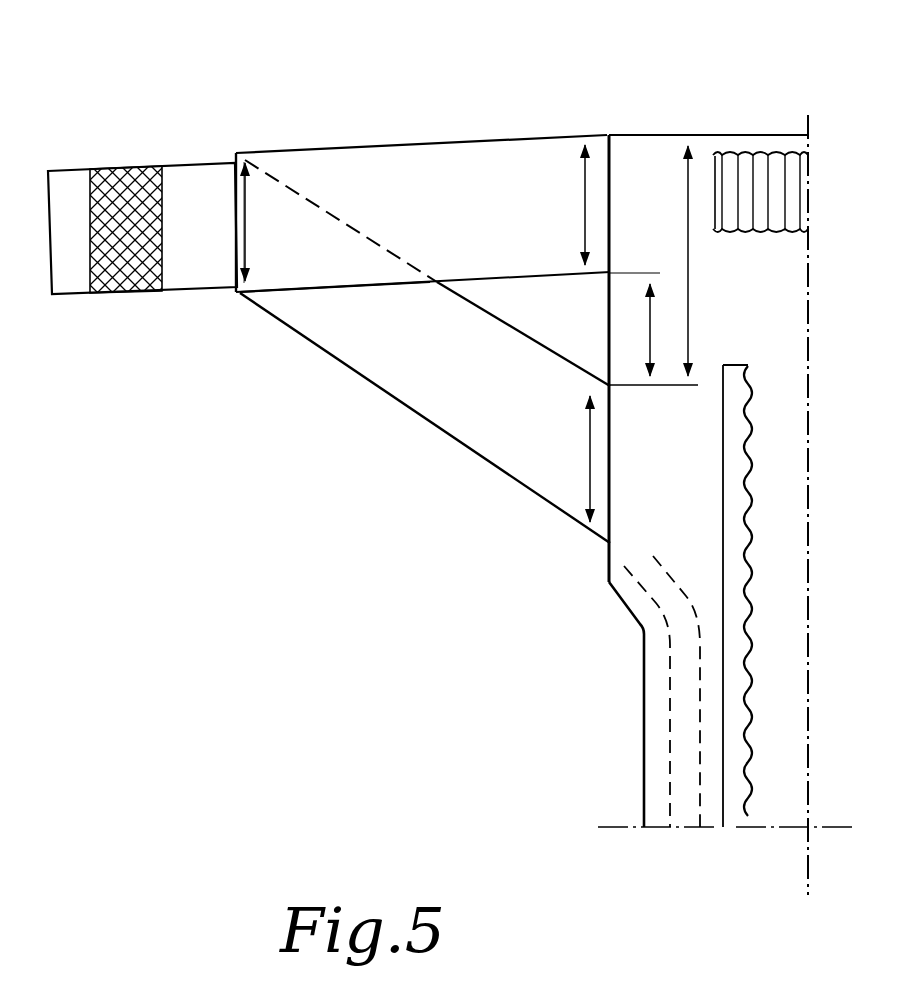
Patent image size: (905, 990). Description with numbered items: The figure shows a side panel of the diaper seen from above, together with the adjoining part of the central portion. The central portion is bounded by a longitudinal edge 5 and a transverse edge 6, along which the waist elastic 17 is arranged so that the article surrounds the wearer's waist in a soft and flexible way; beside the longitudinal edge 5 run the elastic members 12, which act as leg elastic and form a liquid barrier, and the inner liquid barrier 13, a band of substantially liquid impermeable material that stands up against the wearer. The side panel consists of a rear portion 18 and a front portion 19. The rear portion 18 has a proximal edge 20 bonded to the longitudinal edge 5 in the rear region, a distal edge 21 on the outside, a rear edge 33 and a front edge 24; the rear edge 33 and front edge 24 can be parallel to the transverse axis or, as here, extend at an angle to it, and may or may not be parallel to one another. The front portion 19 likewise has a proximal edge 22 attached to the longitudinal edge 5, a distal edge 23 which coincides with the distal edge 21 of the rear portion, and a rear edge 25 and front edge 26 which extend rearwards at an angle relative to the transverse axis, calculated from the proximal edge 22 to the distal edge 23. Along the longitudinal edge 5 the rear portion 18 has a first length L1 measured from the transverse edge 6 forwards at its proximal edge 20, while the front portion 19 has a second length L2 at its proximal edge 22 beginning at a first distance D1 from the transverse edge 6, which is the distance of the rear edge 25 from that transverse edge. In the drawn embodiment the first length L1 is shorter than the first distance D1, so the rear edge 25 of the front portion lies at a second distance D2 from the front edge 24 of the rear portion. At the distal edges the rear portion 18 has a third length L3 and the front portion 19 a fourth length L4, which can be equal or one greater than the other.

The longitudinal edge 5 is at (643, 703).
The transverse edge 6 is at (745, 134).
The elastic member 12 is at (698, 796).
The inner liquid barrier 13 is at (733, 790).
The waist elastic 17 is at (772, 184).
The rear portion of the side panel 18 is at (435, 173).
The front portion of the side panel 19 is at (425, 435).
The proximal edge of the rear portion 20 is at (616, 172).
The distal edge of the rear portion 21 is at (222, 274).
The distal edge of the front portion 23 is at (183, 274).
The front edge of the rear portion 24 is at (333, 293).
The rear edge of the front portion 25 is at (527, 337).
The front edge of the front portion 26 is at (532, 495).
The rear edge of the rear portion 33 is at (503, 137).
The proximal edge of the front portion 22 is at (612, 493).
The first length L1 is at (585, 200).
The second length L2 is at (590, 447).
The third length L3 is at (248, 226).
The fourth length L4 is at (290, 165).
The first distance D1 is at (688, 258).
The second distance D2 is at (650, 330).